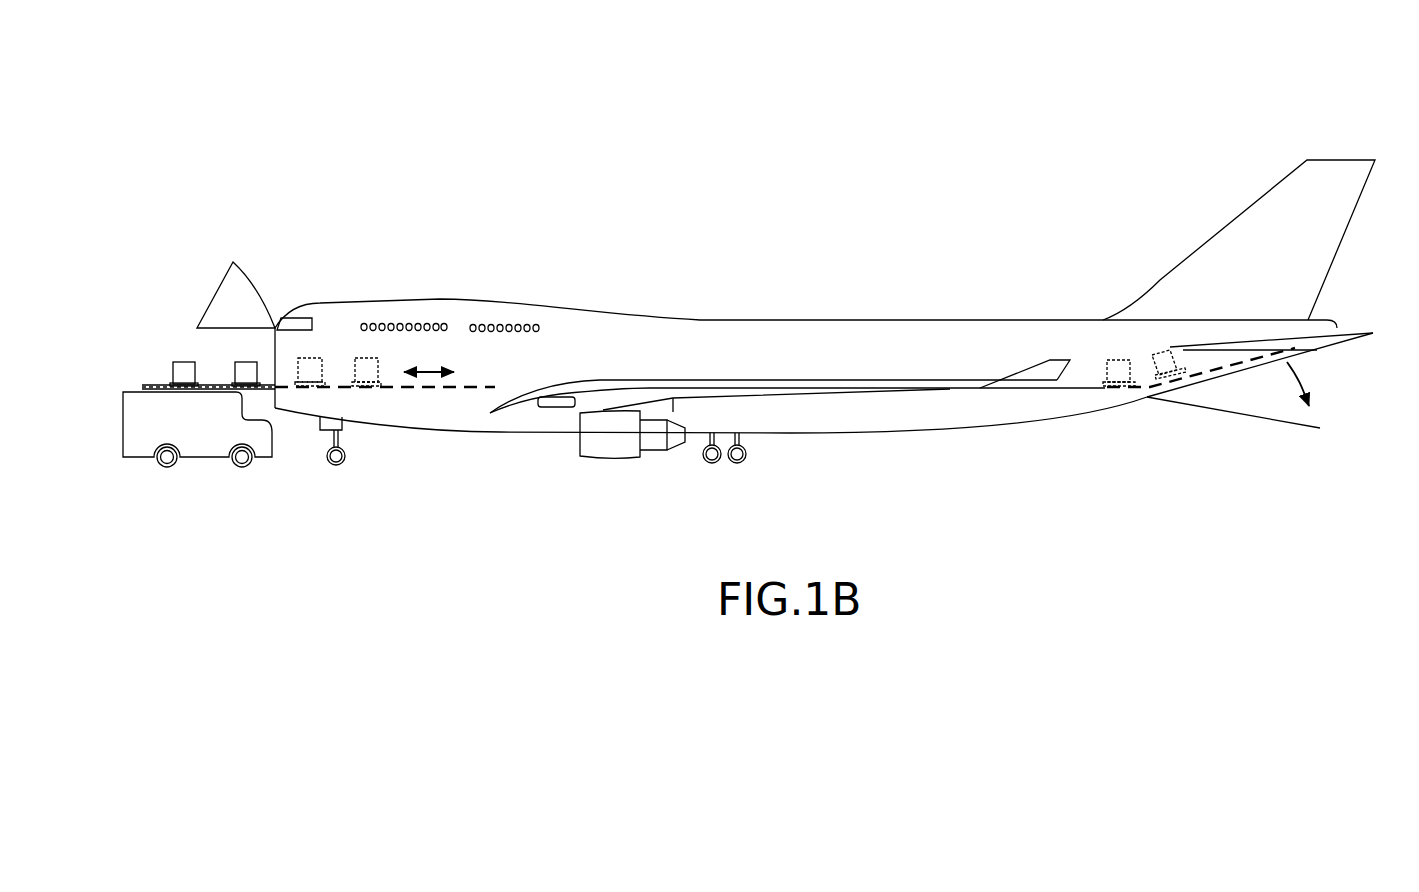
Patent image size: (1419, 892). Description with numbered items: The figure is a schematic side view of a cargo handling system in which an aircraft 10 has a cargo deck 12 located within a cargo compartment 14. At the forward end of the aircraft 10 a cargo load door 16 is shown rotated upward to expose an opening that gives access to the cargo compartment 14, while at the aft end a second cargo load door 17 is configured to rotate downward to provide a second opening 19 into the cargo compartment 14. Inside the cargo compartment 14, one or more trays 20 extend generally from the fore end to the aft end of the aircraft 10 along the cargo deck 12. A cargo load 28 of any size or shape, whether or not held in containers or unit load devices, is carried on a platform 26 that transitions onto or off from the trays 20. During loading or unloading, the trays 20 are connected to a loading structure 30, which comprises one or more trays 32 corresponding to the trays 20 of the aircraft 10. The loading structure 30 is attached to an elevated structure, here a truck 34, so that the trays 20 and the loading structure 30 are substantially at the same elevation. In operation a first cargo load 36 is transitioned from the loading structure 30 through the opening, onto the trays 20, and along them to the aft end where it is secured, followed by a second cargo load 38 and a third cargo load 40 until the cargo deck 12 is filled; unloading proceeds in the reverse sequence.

The aircraft 10 is at (338, 192).
The cargo deck 12 is at (361, 388).
The cargo compartment 14 is at (641, 330).
The cargo load door 16 is at (228, 275).
The second cargo load door 17 is at (1244, 414).
The second opening 19 is at (1320, 377).
The trays 20 is at (422, 407).
The platform 26 is at (303, 387).
The cargo load 28 is at (186, 362).
The loading structure 30 is at (147, 387).
The trays of loading structure 32 is at (165, 386).
The truck 34 is at (193, 454).
The first cargo load 36 is at (1117, 358).
The second cargo load 38 is at (373, 365).
The third cargo load 40 is at (317, 372).